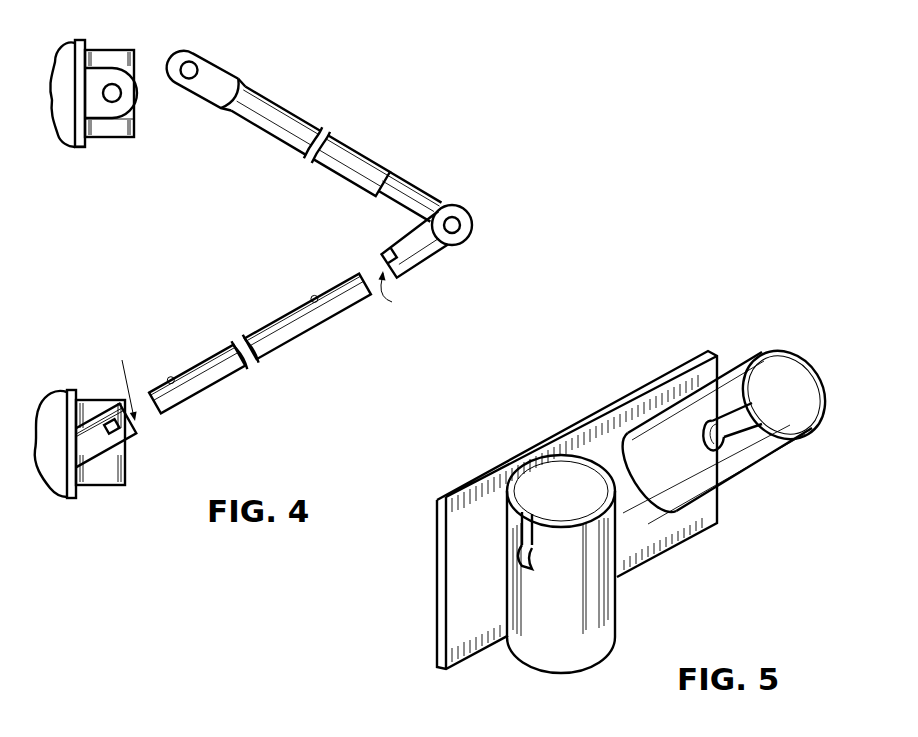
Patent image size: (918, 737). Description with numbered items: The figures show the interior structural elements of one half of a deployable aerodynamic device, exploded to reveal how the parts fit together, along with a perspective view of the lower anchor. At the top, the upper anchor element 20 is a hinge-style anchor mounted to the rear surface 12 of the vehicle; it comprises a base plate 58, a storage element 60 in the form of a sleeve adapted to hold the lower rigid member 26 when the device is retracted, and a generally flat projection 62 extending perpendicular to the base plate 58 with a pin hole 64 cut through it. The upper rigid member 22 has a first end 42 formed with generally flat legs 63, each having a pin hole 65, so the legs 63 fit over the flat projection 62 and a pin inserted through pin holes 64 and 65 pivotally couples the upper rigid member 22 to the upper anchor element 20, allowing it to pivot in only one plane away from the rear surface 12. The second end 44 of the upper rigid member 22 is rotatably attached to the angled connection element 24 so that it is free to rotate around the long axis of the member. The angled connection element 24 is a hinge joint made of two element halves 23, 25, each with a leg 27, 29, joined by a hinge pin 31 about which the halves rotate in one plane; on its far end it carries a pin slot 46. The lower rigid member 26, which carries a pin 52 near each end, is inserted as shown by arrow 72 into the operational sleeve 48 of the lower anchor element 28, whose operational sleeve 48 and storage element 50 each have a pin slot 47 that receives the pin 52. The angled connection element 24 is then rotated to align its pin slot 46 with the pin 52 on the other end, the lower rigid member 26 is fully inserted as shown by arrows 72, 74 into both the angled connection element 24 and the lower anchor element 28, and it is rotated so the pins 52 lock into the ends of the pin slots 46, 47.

In FIG. 4, the rear surface 12 is at (68, 50).
In FIG. 4, the upper anchor element 20 is at (80, 40).
In FIG. 4, the upper rigid member 22 is at (297, 114).
In FIG. 4, the element half 23 is at (481, 211).
In FIG. 4, the angled connection element 24 is at (347, 157).
In FIG. 4, the element half 25 is at (437, 256).
In FIG. 4, the lower rigid member 26 is at (260, 338).
In FIG. 4, the leg 27 is at (456, 197).
In FIG. 4, the lower anchor element 28 is at (70, 392).
In FIG. 5, the lower anchor element 28 is at (486, 474).
In FIG. 4, the leg 29 is at (464, 243).
In FIG. 4, the hinge pin 31 is at (440, 240).
In FIG. 4, the first end 42 is at (200, 52).
In FIG. 4, the second end 44 is at (390, 170).
In FIG. 4, the pin slot 46 is at (408, 274).
In FIG. 4, the pin slot 47 is at (137, 433).
In FIG. 5, the pin slot 47 is at (530, 565).
In FIG. 4, the operational sleeve 48 is at (91, 418).
In FIG. 5, the operational sleeve 48 is at (732, 417).
In FIG. 4, the storage element 50 is at (117, 484).
In FIG. 5, the storage element 50 is at (561, 581).
In FIG. 4, the pin 52 is at (172, 375).
In FIG. 4, the base plate 58 is at (82, 148).
In FIG. 4, the storage element 60 is at (124, 138).
In FIG. 4, the flat projection 62 is at (113, 122).
In FIG. 4, the flat leg 63 is at (236, 72).
In FIG. 4, the pin hole 64 is at (112, 82).
In FIG. 4, the pin hole 65 is at (180, 62).
In FIG. 4, the arrow 72 is at (126, 379).
In FIG. 4, the arrow 74 is at (396, 291).